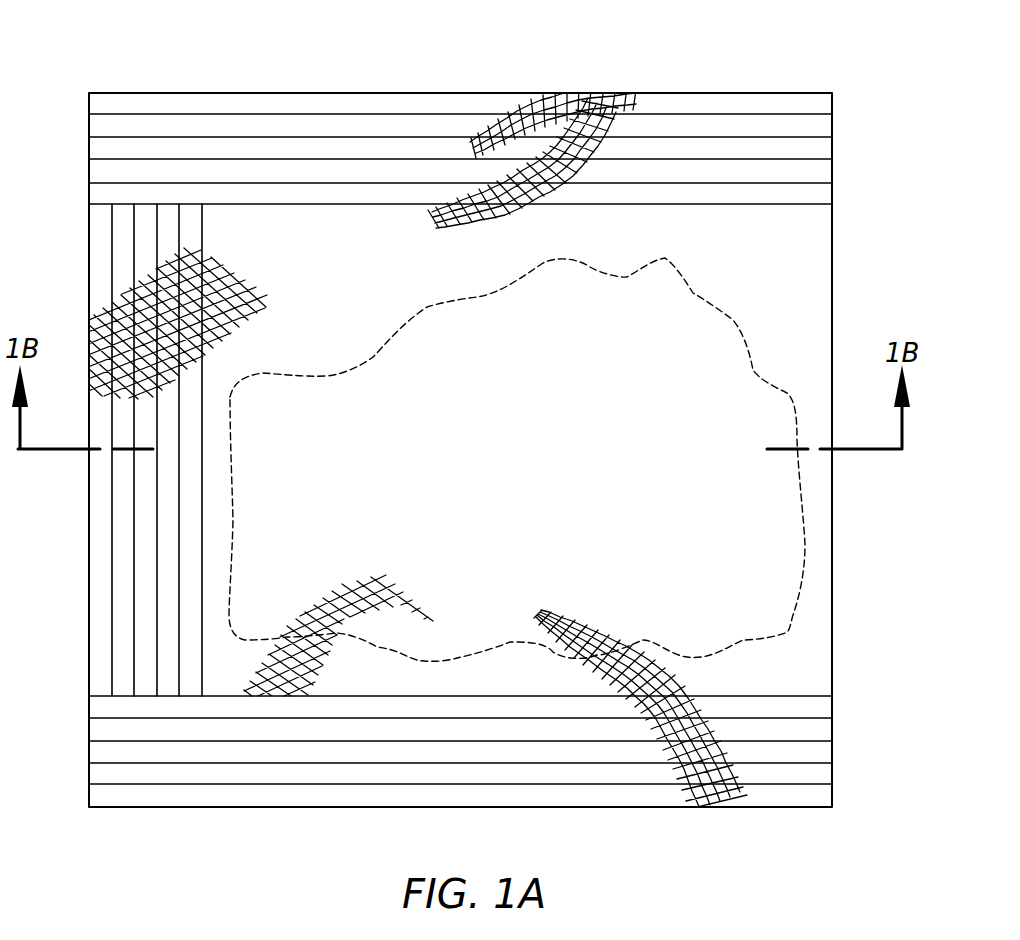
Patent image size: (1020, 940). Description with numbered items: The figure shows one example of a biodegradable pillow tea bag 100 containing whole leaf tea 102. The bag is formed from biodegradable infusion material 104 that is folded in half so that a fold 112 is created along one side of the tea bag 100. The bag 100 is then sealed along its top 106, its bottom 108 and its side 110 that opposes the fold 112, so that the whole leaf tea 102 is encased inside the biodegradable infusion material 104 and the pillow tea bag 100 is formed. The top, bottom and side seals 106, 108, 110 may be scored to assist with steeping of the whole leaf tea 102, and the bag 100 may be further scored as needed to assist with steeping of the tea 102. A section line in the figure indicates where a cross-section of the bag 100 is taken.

The biodegradable pillow tea bag 100 is at (147, 66).
The whole leaf tea 102 is at (708, 348).
The biodegradable infusion material 104 is at (788, 241).
The top seal 106 is at (717, 103).
The bottom seal 108 is at (795, 795).
The side seal 110 is at (123, 596).
The fold 112 is at (832, 503).